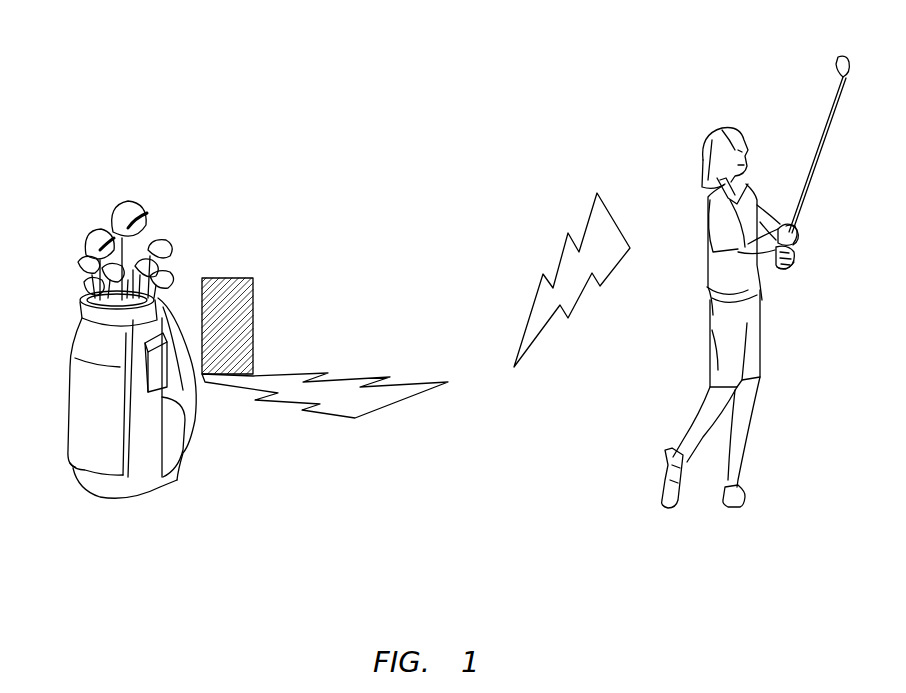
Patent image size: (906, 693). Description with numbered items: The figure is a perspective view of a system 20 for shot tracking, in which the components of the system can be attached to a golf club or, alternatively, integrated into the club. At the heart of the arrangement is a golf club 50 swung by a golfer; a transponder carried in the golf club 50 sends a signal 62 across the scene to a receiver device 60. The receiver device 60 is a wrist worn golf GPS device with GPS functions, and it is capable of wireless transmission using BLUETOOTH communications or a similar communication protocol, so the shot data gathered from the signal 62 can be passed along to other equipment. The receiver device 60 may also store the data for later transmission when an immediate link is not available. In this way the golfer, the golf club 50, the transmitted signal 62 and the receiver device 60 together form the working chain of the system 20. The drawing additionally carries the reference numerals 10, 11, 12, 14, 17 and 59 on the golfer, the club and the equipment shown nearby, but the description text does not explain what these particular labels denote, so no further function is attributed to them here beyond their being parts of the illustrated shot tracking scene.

The transmitter / base unit 10 is at (238, 279).
The hands of golfer 11 is at (778, 272).
The grip of golf club 12 is at (790, 243).
The shaft of golf club 14 is at (822, 152).
The club head 17 is at (838, 57).
The system 20 is at (386, 101).
The golf club 50 is at (822, 110).
The golfer 59 is at (690, 143).
The receiver device 60 is at (152, 206).
The signal 62 is at (560, 258).